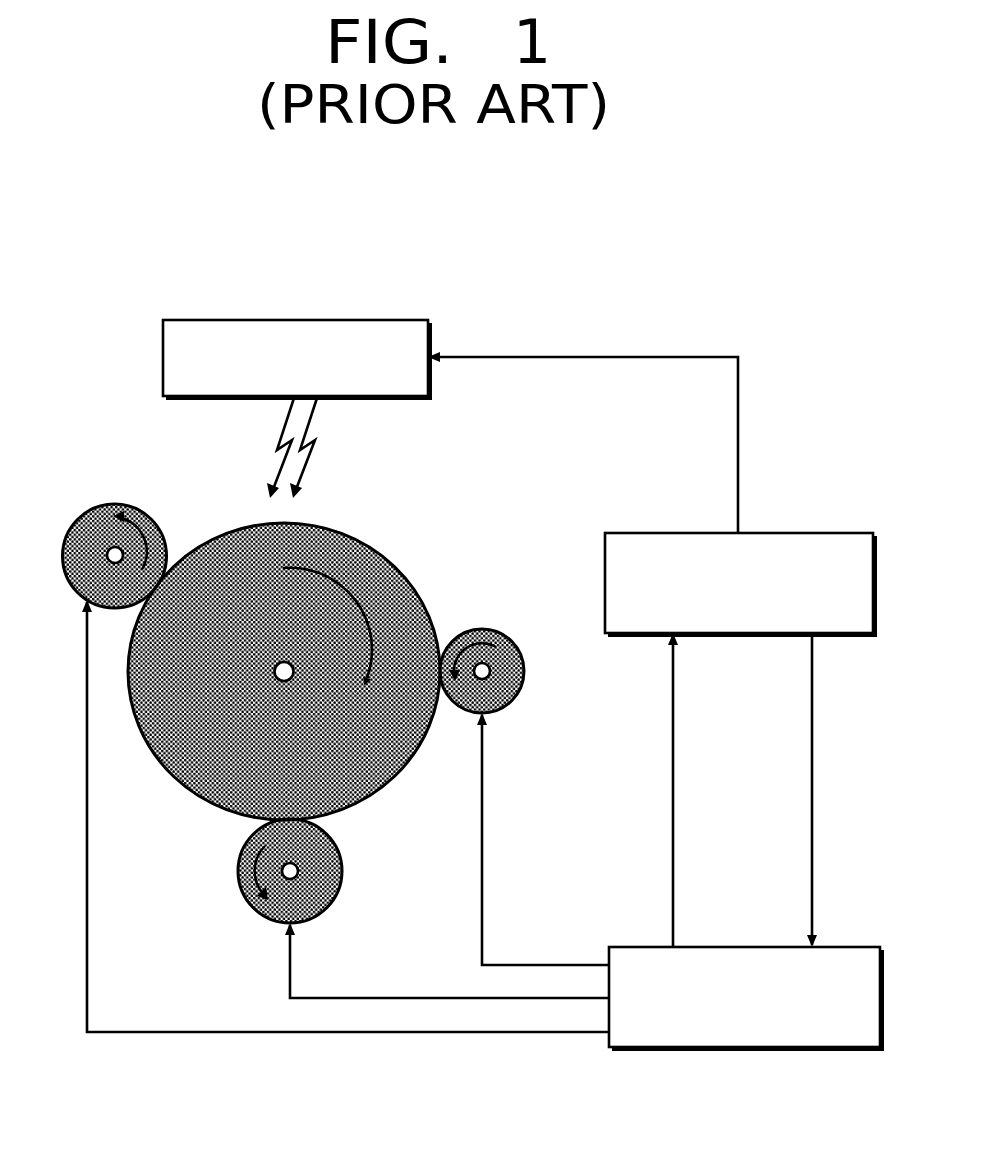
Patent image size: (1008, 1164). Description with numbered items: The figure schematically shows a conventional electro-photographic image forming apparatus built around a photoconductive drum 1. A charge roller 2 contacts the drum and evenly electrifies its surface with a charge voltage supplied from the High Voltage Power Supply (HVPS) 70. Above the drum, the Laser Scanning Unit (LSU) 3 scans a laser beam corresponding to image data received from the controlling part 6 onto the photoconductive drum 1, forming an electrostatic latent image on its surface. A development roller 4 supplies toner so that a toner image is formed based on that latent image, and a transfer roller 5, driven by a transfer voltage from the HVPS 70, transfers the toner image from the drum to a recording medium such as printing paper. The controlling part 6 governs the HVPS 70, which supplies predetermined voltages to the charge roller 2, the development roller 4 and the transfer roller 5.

The photoconductive drum 1 is at (358, 538).
The charge roller 2 is at (113, 503).
The Laser Scanning Unit (LSU) 3 is at (293, 318).
The development roller 4 is at (481, 628).
The transfer roller 5 is at (343, 868).
The controlling part 6 is at (826, 531).
The High Voltage Power Supply (HVPS) 70 is at (856, 945).